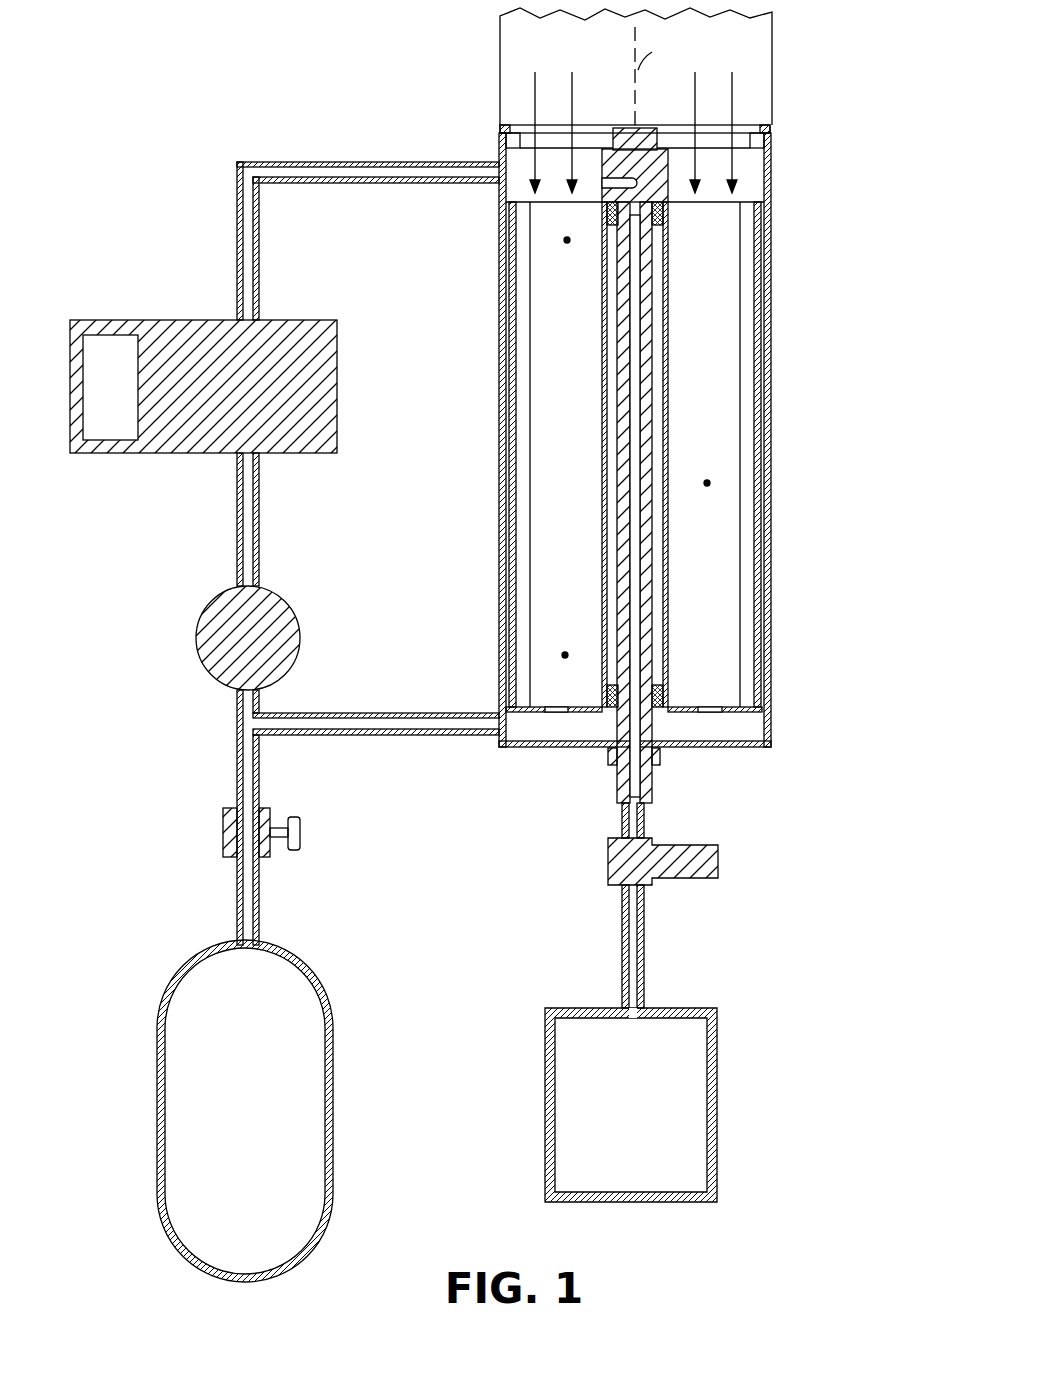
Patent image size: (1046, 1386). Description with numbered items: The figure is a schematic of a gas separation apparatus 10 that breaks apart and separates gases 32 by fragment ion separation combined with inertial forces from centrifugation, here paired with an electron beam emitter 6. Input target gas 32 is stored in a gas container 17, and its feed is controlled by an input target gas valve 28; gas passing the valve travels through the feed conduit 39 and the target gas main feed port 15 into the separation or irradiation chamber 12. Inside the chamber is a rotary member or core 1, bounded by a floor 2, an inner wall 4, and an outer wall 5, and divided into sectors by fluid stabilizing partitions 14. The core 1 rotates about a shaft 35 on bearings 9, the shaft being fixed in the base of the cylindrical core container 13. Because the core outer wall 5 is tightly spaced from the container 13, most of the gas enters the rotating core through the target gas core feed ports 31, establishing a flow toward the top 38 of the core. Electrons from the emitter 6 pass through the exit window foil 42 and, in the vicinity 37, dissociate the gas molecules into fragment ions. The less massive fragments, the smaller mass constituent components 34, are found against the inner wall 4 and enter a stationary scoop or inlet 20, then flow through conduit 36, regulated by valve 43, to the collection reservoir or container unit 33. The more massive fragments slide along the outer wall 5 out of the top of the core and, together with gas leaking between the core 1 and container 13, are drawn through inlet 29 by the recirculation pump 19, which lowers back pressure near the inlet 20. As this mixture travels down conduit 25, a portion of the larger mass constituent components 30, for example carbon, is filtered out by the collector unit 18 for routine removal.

The rotary member or core 1 is at (707, 483).
The floor 2 is at (692, 706).
The inner wall 4 is at (675, 552).
The outer wall 5 is at (757, 579).
The electron beam emitter 6 is at (500, 22).
The bearings 9 is at (663, 211).
The gas separation apparatus 10 is at (158, 754).
The separation or irradiation chamber 12 is at (802, 344).
The cylindrical core container 13 is at (772, 232).
The fluid stabilizing partitions 14 is at (735, 200).
The target gas main feed port 15 is at (500, 715).
The gas container 17 is at (158, 1122).
The collector unit 18 is at (185, 320).
The recirculation pump 19 is at (196, 638).
The stationary scoop or inlet 20 is at (603, 185).
The conduit 25 is at (316, 162).
The input target gas valve 28 is at (302, 832).
The inlet 29 is at (498, 165).
The larger mass constituent components 30 is at (117, 356).
The target gas core feed ports 31 is at (556, 712).
The target gas 32 is at (302, 1178).
The collection reservoir or container unit 33 is at (718, 1058).
The smaller mass constituent components 34 is at (650, 1053).
The shaft 35 is at (652, 782).
The conduit 36 is at (635, 342).
The vicinity of electron cloud 37 is at (565, 655).
The top of the rotating core 38 is at (567, 240).
The feed conduit 39 is at (395, 735).
The electron beam emitter exit window foil 42 is at (747, 125).
The valve 43 is at (720, 862).